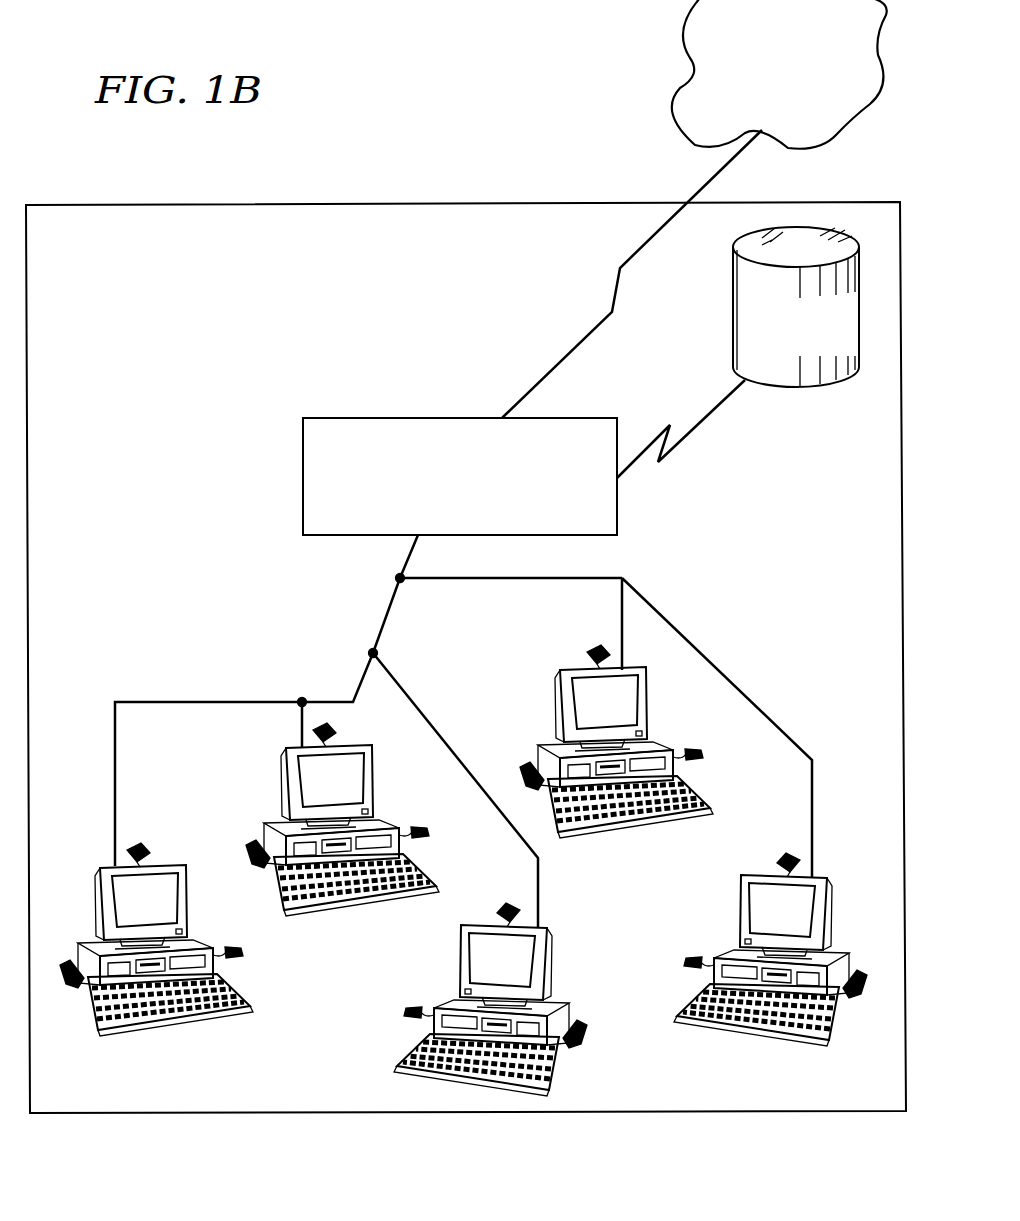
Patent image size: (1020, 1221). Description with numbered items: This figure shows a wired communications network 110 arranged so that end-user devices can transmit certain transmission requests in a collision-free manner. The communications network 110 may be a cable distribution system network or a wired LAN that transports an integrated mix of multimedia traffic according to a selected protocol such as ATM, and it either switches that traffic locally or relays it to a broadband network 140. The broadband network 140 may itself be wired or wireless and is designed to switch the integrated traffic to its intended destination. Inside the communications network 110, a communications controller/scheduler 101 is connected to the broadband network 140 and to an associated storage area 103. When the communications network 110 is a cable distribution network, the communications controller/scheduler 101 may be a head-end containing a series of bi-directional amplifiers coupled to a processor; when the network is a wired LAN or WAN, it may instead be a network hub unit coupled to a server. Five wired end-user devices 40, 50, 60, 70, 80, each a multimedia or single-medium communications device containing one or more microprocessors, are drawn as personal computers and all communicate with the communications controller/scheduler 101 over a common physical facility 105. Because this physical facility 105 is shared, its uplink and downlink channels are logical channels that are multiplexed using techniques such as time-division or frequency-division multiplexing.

The end-user device 40 is at (133, 1028).
The end-user device 50 is at (333, 904).
The end-user device 60 is at (549, 970).
The end-user device 70 is at (647, 703).
The end-user device 80 is at (740, 905).
The communications controller/scheduler 101 is at (372, 418).
The storage area 103 is at (735, 324).
The common physical facility 105 is at (398, 562).
The communications network 110 is at (365, 205).
The broadband network 140 is at (674, 96).